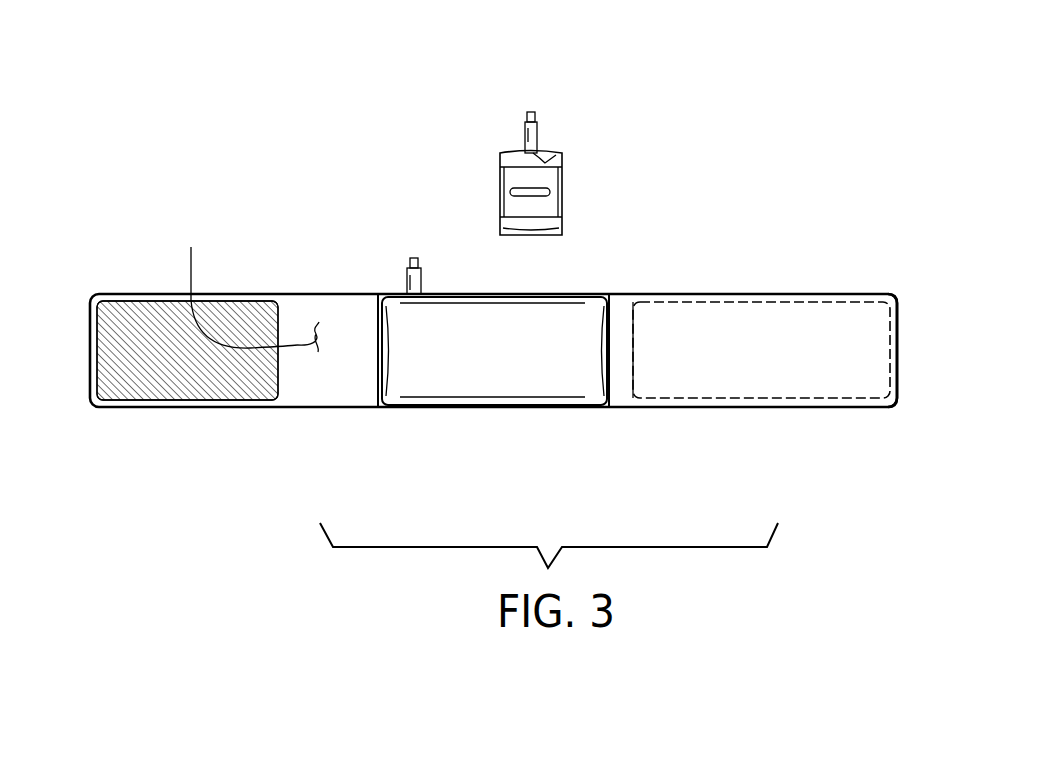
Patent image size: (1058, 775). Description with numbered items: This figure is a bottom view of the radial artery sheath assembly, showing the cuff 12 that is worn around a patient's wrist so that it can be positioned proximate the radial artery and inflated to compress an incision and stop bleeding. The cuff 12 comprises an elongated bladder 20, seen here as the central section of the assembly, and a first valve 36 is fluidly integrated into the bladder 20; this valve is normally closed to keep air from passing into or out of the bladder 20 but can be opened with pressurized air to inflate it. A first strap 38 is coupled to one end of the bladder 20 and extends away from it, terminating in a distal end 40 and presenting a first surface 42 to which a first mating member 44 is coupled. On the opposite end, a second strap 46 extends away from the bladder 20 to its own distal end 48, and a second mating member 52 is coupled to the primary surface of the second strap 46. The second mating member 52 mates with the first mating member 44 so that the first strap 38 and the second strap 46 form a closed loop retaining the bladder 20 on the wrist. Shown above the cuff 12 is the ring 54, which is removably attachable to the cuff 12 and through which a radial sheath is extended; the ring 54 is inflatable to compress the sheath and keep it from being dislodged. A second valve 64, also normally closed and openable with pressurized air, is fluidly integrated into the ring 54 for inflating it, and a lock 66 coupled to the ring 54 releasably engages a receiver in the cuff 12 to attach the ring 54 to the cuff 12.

The cuff 12 is at (764, 247).
The bladder 20 is at (463, 293).
The first valve 36 is at (405, 272).
The first strap 38 is at (313, 294).
The distal end 40 is at (90, 360).
The first surface 42 is at (246, 281).
The first mating member 44 is at (190, 380).
The second strap 46 is at (848, 293).
The distal end 48 is at (898, 330).
The second mating member 52 is at (633, 317).
The ring 54 is at (560, 158).
The second valve 64 is at (525, 135).
The lock 66 is at (510, 191).